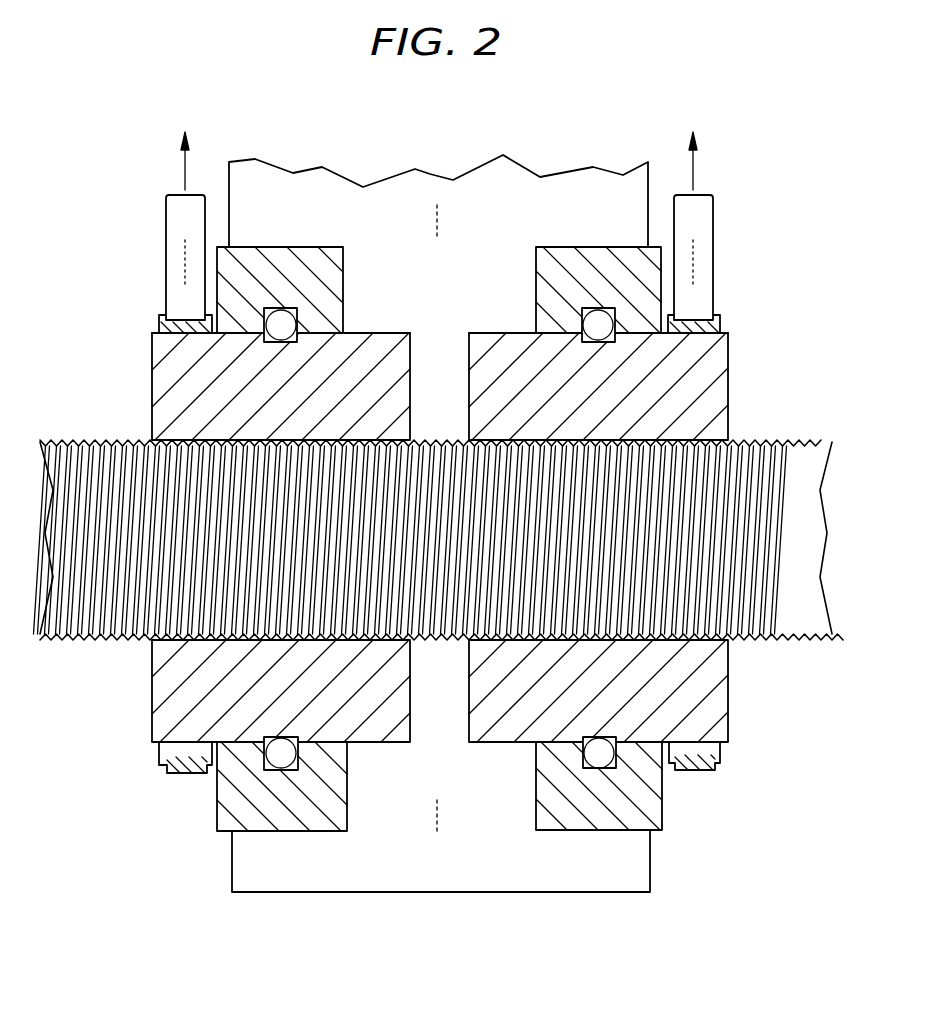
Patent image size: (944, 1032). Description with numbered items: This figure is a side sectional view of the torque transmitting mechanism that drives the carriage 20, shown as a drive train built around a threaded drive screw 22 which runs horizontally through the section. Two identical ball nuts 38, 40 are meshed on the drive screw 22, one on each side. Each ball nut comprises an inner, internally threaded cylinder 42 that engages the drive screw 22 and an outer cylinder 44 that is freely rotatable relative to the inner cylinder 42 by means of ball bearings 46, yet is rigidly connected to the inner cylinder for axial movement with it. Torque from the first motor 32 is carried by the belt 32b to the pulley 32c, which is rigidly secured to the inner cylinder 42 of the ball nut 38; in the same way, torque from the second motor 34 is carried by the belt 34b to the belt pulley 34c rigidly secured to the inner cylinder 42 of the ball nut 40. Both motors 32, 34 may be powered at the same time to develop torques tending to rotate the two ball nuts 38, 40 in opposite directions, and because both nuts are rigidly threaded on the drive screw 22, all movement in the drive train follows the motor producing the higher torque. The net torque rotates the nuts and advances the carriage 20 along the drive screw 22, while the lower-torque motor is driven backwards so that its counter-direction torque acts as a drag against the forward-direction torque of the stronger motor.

The carriage 20 is at (510, 208).
The drive screw 22 is at (787, 438).
The motor 32 is at (198, 120).
The motor 34 is at (707, 119).
The belt 32b is at (178, 230).
The belt 34b is at (705, 232).
The pulley 32c is at (158, 322).
The belt pulley 34c is at (722, 325).
The ball nut 38 is at (157, 397).
The ball nut 40 is at (723, 377).
The inner cylinder 42 is at (354, 338).
The outer cylinder 44 is at (343, 272).
The ball bearings 46 is at (279, 310).